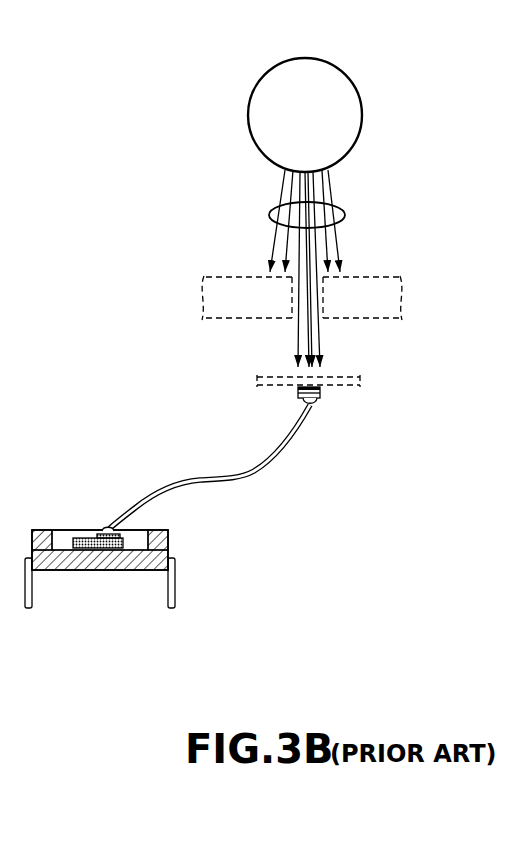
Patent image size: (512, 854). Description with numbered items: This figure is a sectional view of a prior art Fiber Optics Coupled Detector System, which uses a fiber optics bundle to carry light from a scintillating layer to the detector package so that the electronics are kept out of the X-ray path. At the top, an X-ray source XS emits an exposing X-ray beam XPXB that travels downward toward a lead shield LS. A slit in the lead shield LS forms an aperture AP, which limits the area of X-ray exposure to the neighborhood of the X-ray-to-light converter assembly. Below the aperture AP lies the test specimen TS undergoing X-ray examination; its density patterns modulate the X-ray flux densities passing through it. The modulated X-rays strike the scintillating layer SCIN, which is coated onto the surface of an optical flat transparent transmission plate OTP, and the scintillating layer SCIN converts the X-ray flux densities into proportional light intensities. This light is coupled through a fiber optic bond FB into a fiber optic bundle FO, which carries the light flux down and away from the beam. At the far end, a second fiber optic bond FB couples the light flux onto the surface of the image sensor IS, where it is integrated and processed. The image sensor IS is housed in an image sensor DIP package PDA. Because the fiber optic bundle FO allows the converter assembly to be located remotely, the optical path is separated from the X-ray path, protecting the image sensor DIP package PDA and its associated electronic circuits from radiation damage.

The X-ray source XS is at (320, 58).
The exposing X-ray beam XPXB is at (270, 213).
The lead shield LS is at (225, 277).
The aperture AP is at (321, 315).
The test specimen TS is at (272, 375).
The scintillating layer SCIN is at (320, 392).
The optical flat transparent transmission plate OTP is at (324, 403).
The fiber optic bundle FO is at (202, 473).
The fiber optic bond FB is at (303, 405).
The image sensor IS is at (80, 538).
The image sensor DIP package PDA is at (168, 547).